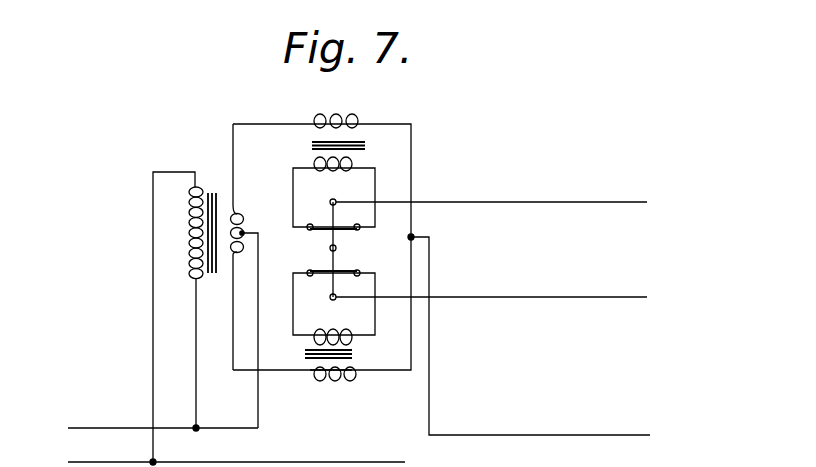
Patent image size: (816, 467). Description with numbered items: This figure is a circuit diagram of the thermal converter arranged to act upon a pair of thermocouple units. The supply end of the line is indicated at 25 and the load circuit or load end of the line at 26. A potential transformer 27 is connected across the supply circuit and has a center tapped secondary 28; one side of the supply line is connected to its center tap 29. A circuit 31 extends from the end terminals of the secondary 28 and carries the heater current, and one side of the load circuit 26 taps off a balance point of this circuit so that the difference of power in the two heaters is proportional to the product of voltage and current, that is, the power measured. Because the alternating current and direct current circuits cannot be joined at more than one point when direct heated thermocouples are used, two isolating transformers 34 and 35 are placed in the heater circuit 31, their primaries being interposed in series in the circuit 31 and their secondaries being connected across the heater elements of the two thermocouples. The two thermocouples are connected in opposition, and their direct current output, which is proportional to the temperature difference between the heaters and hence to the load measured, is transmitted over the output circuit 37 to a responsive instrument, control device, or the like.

The supply end of the line 25 is at (228, 445).
The load circuit 26 is at (532, 350).
The potential transformer 27 is at (214, 172).
The center tapped secondary 28 is at (240, 218).
The center tap 29 is at (244, 233).
The circuit 31 is at (411, 160).
The isolating transformer 34 is at (376, 150).
The isolating transformer 35 is at (365, 357).
The output circuit 37 is at (648, 205).